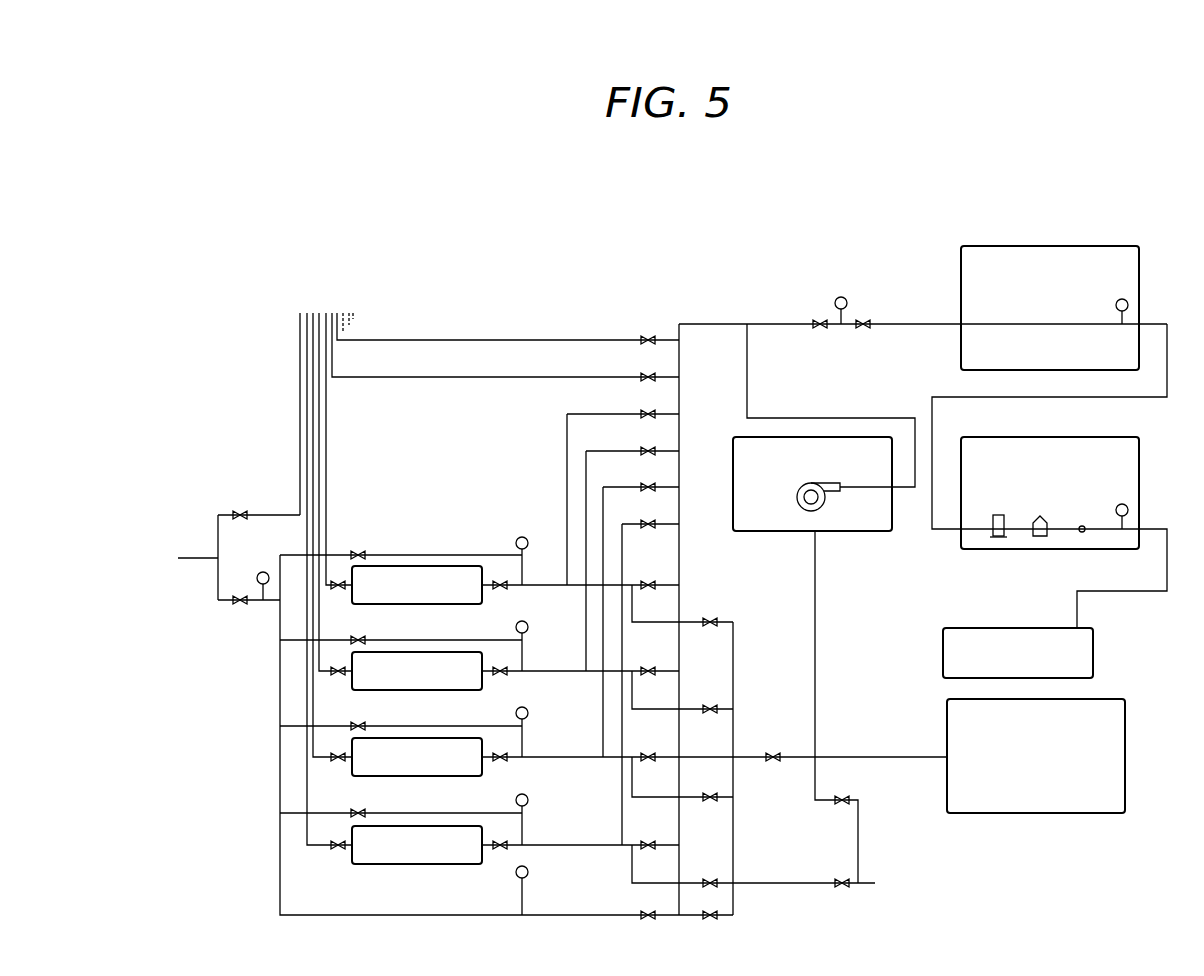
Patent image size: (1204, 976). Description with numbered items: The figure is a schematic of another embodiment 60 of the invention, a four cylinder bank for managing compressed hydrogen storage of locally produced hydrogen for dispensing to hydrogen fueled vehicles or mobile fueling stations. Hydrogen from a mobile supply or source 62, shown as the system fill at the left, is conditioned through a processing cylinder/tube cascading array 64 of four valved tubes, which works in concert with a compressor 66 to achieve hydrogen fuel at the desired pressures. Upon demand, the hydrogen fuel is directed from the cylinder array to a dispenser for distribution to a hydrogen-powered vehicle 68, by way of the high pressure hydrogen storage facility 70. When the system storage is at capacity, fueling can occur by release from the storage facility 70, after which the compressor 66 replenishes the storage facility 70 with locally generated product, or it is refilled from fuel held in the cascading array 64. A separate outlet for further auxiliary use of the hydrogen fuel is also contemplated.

The embodiment 60 is at (1074, 80).
The mobile supply or source 62 is at (100, 522).
The processing cylinder/tube cascading array 64 is at (233, 552).
The compressor 66 is at (845, 532).
The hydrogen-powered vehicle 68 is at (1013, 627).
The high pressure hydrogen storage facility 70 is at (1006, 245).